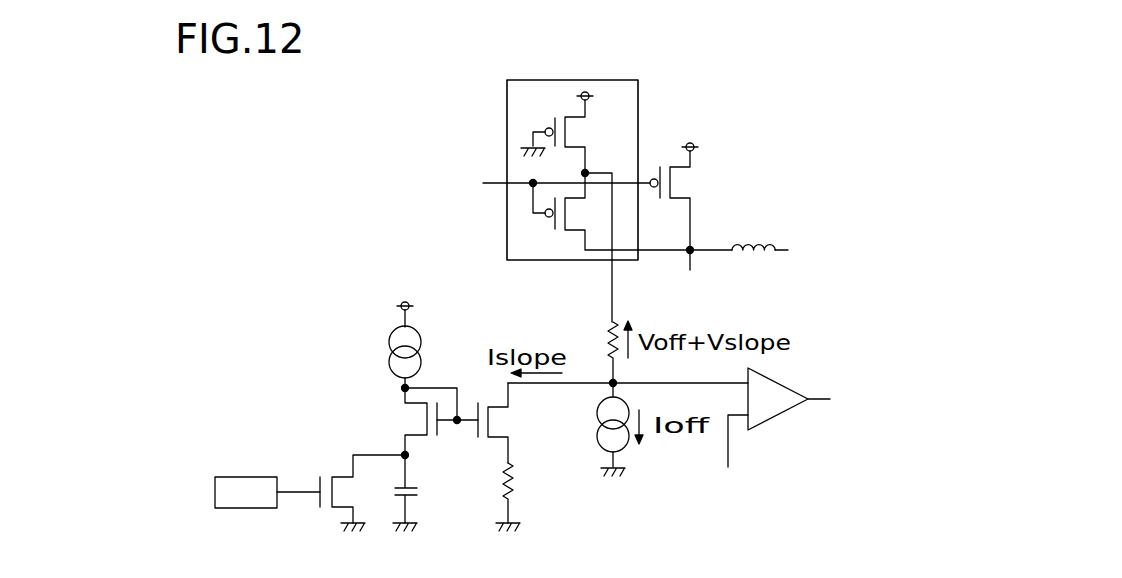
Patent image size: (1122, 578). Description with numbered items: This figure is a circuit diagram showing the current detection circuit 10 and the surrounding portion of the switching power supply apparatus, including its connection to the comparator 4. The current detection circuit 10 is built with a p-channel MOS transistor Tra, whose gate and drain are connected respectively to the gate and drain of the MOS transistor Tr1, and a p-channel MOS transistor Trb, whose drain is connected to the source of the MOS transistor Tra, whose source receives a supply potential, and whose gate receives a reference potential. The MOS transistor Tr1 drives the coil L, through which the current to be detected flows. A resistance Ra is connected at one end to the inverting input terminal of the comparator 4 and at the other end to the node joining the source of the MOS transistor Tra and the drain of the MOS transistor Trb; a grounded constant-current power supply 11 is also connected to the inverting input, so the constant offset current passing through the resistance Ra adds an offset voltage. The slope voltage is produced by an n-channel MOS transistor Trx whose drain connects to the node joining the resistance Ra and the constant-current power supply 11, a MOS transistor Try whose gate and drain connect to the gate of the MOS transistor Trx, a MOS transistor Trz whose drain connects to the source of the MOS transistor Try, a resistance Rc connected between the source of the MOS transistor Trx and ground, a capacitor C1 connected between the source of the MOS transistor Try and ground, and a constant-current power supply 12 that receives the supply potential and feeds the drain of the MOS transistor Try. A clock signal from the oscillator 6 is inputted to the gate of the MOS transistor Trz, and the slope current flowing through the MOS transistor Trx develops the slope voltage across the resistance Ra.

The comparator 4 is at (777, 420).
The oscillator 6 is at (247, 477).
The current detection circuit 10 is at (573, 201).
The constant-current power supply 11 is at (598, 437).
The constant-current power supply 12 is at (390, 366).
The MOS transistor Tr1 is at (690, 192).
The p-channel MOS transistor Tra is at (611, 215).
The p-channel MOS transistor Trb is at (573, 132).
The n-channel MOS transistor Trx is at (502, 423).
The MOS transistor Try is at (397, 421).
The MOS transistor Trz is at (347, 496).
The coil L is at (739, 263).
The resistance Ra is at (595, 352).
The resistance Rc is at (520, 497).
The capacitor C1 is at (424, 493).